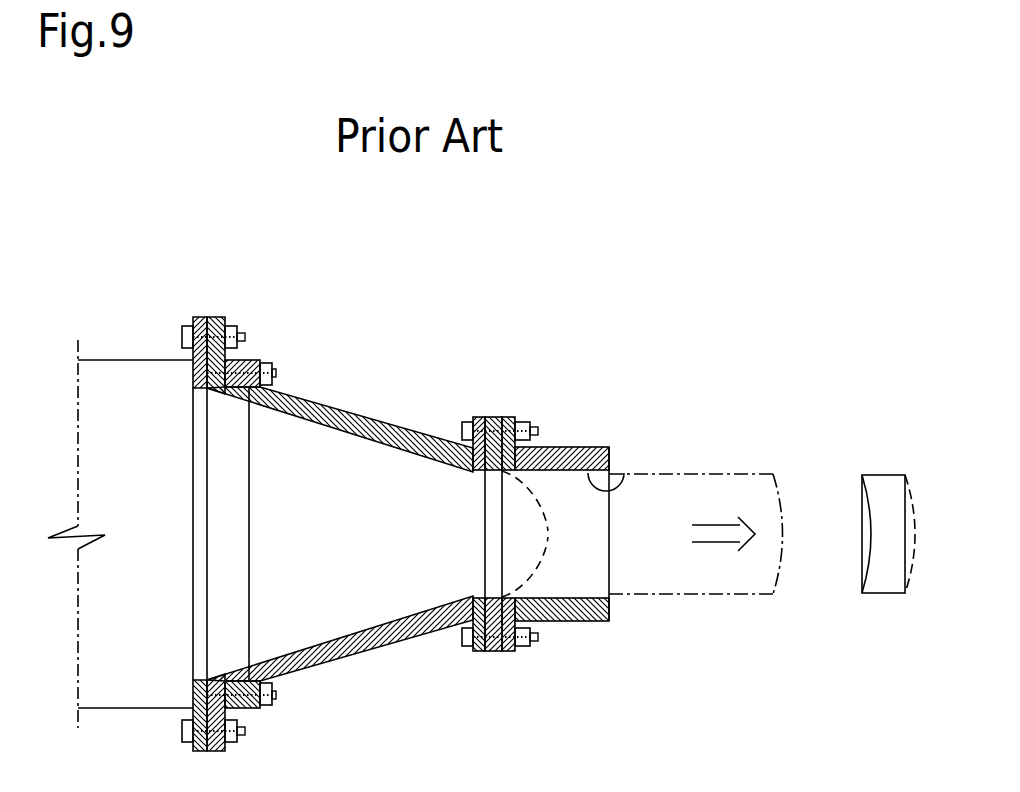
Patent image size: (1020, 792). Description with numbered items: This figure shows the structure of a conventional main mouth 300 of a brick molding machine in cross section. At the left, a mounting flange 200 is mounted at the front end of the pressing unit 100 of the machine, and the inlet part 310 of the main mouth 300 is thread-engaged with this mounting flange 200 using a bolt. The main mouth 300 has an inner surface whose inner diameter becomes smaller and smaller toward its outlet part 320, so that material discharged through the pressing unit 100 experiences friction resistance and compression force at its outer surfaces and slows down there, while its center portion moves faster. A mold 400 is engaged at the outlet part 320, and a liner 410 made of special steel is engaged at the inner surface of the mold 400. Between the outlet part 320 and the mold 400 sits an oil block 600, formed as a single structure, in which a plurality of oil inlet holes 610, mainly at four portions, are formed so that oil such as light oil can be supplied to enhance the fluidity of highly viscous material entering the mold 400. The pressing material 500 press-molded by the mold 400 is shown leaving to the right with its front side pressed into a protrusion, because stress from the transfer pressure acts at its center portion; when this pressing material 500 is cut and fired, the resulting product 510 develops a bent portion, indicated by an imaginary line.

The pressing unit 100 is at (122, 360).
The mounting flange 200 is at (203, 317).
The main mouth 300 is at (358, 404).
The inlet part 310 is at (250, 395).
The outlet part 320 is at (452, 470).
The mold 400 is at (557, 437).
The liner 410 is at (614, 471).
The pressing material 500 is at (697, 482).
The product 510 is at (884, 480).
The oil block 600 is at (488, 417).
The oil inlet holes 610 is at (496, 534).